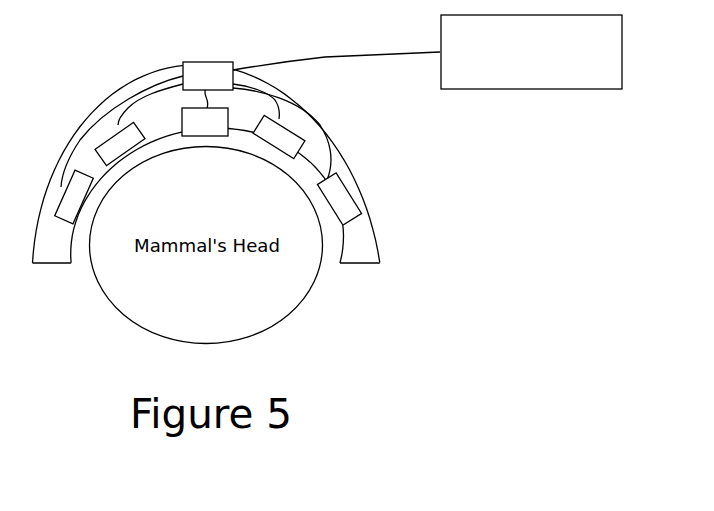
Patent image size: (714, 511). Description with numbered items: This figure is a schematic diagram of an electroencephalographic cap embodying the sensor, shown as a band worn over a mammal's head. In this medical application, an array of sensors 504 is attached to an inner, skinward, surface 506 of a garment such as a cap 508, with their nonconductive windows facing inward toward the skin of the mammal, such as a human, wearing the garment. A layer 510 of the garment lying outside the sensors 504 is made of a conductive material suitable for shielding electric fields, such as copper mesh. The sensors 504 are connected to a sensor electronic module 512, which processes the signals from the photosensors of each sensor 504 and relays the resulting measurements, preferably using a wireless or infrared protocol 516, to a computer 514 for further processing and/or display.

The sensors 504 is at (207, 166).
The inner, skinward, surface 506 is at (338, 235).
The cap 508 is at (360, 235).
The layer 510 is at (247, 192).
The sensor electronic module 512 is at (191, 86).
The computer 514 is at (507, 82).
The wireless or infrared protocol 516 is at (325, 57).